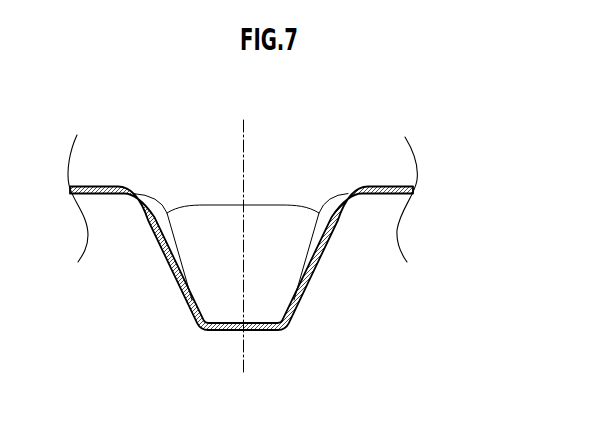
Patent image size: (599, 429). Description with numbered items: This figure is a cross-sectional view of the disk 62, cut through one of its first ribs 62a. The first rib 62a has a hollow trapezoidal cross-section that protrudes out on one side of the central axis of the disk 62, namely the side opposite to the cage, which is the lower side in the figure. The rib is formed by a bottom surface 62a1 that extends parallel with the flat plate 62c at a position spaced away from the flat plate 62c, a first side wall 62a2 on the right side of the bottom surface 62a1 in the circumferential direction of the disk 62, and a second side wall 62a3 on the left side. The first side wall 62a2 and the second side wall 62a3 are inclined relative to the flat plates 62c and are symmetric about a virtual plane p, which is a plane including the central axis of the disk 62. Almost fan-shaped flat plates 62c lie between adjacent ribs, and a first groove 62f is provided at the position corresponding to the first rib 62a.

The disk 62 is at (283, 233).
The first rib 62a is at (246, 295).
The bottom surface 62a1 is at (272, 331).
The first side wall 62a2 is at (316, 268).
The second side wall 62a3 is at (168, 265).
The flat plate 62c is at (100, 187).
The first groove 62f is at (286, 205).
The virtual plane p is at (245, 131).